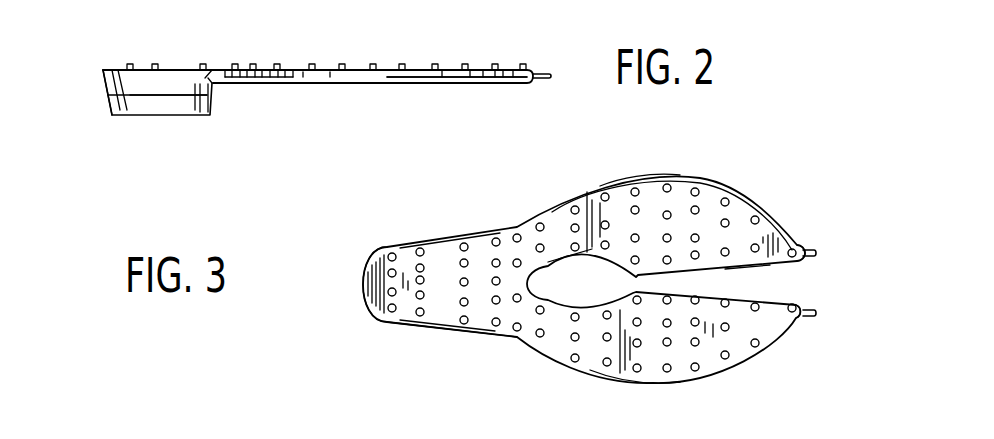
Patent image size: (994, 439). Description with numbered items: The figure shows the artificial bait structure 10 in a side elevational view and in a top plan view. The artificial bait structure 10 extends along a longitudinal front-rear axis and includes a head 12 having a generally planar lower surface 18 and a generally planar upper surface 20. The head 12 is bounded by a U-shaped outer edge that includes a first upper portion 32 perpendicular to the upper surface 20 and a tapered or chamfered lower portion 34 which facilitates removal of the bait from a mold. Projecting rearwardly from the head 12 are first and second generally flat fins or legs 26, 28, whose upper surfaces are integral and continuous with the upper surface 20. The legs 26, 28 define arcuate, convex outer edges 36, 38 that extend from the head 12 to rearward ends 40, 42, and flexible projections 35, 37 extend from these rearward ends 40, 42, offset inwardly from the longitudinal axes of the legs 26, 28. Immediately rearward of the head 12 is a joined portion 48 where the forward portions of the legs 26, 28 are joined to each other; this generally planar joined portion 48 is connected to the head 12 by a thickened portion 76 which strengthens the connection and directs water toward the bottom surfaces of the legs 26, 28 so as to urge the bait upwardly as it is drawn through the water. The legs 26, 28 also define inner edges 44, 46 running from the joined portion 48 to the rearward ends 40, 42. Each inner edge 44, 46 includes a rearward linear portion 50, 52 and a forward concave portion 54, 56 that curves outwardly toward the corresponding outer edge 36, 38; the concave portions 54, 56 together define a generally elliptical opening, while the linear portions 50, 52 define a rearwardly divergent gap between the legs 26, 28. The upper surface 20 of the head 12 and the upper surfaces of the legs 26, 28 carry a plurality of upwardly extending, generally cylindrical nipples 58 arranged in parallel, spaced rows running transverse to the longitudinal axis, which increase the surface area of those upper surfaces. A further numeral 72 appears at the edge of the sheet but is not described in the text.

In FIG. 2, the artificial bait structure 10 is at (402, 93).
In FIG. 3, the artificial bait structure 10 is at (360, 310).
In FIG. 2, the head 12 is at (132, 85).
In FIG. 3, the head 12 is at (447, 332).
In FIG. 2, the lower surface 18 is at (147, 117).
In FIG. 2, the upper surface 20 is at (122, 72).
In FIG. 3, the upper surface 20 is at (455, 302).
In FIG. 3, the first leg 26 is at (740, 212).
In FIG. 2, the second leg 28 is at (417, 68).
In FIG. 3, the second leg 28 is at (775, 331).
In FIG. 2, the first upper portion 32 is at (180, 78).
In FIG. 2, the chamfered lower portion 34 is at (207, 108).
In FIG. 3, the flexible projection 35 is at (803, 248).
In FIG. 3, the outer edge 36 is at (621, 181).
In FIG. 2, the flexible projection 37 is at (540, 71).
In FIG. 3, the flexible projection 37 is at (804, 308).
In FIG. 3, the outer edge 38 is at (614, 384).
In FIG. 3, the rearward end 40 is at (808, 259).
In FIG. 3, the rearward end 42 is at (805, 320).
In FIG. 3, the inner edge 44 is at (709, 269).
In FIG. 3, the inner edge 46 is at (741, 292).
In FIG. 3, the joined portion 48 is at (533, 267).
In FIG. 3, the rearward linear portion 50 is at (665, 276).
In FIG. 3, the rearward linear portion 52 is at (682, 290).
In FIG. 3, the forward concave portion 54 is at (587, 261).
In FIG. 3, the forward concave portion 56 is at (568, 304).
In FIG. 2, the nipples 58 is at (310, 66).
In FIG. 3, the nipples 58 is at (387, 253).
In FIG. 3, the slot 72 is at (357, 431).
In FIG. 2, the thickened portion 76 is at (206, 78).